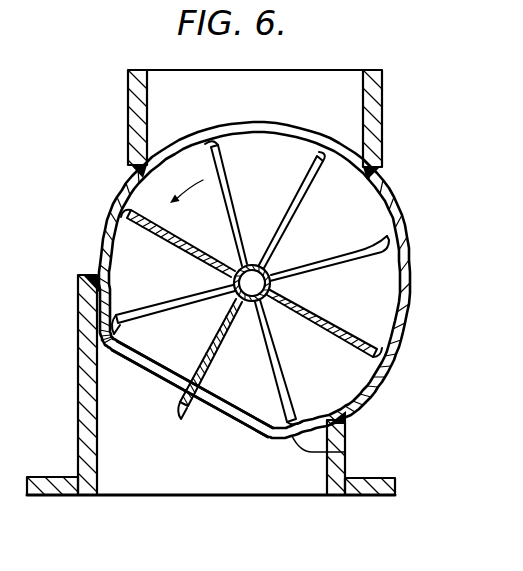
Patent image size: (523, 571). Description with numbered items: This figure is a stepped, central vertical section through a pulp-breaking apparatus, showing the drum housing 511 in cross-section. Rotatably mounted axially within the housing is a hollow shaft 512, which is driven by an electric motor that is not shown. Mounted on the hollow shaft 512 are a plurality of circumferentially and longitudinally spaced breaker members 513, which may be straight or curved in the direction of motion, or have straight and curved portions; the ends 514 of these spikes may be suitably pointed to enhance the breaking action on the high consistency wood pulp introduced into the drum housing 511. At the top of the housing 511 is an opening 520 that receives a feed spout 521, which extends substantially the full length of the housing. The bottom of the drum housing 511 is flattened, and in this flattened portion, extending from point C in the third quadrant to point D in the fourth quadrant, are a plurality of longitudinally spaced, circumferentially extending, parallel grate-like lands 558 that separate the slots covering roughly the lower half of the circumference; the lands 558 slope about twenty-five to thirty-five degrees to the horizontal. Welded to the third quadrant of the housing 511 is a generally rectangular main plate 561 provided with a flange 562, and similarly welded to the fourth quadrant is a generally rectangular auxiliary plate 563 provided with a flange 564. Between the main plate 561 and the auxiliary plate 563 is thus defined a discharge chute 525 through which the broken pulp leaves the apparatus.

The opening 520 is at (267, 143).
The feed spout 521 is at (375, 118).
The ends of the spikes 514 is at (354, 140).
The breaker members 513 is at (353, 252).
The drum housing 511 is at (411, 266).
The hollow shaft 512 is at (272, 287).
The point C is at (108, 355).
The main plate 561 is at (85, 398).
The flange 562 is at (58, 448).
The discharge chute 525 is at (195, 480).
The grate-like lands 558 is at (267, 436).
The auxiliary plate 563 is at (338, 437).
The point D is at (346, 452).
The flange 564 is at (392, 488).